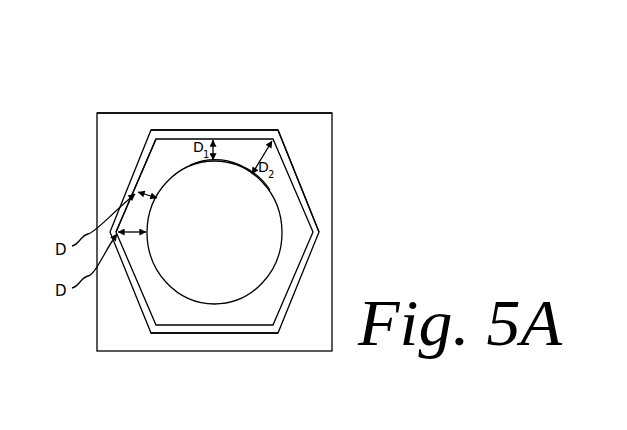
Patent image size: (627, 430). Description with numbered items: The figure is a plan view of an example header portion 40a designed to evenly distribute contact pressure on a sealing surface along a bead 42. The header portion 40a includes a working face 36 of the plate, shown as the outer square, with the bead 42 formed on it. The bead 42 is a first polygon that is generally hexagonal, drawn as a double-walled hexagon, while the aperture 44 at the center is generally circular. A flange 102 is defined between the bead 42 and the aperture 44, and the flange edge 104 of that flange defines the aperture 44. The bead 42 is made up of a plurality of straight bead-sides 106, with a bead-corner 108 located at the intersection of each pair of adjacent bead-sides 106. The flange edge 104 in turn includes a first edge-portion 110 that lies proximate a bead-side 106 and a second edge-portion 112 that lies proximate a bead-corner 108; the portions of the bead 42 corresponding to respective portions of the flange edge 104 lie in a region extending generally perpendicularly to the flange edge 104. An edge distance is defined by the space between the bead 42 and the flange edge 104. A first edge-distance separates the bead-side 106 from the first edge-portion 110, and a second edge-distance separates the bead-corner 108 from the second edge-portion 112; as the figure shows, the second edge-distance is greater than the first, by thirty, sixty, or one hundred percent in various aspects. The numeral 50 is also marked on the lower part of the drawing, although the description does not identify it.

The working face 36 is at (107, 323).
The header portion 40a is at (284, 96).
The bead 42 is at (300, 194).
The aperture 44 is at (178, 180).
The bottom wall 50 is at (172, 310).
The flange 102 is at (298, 240).
The flange edge 104 is at (251, 284).
The bead-side 106 is at (213, 128).
The bead-corner 108 is at (294, 123).
The first edge-portion 110 is at (211, 165).
The second edge-portion 112 is at (249, 178).